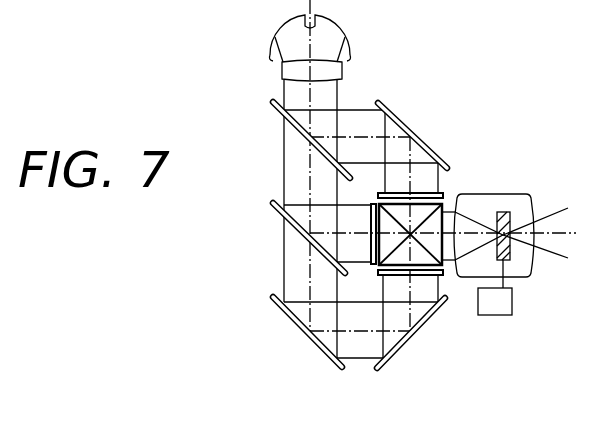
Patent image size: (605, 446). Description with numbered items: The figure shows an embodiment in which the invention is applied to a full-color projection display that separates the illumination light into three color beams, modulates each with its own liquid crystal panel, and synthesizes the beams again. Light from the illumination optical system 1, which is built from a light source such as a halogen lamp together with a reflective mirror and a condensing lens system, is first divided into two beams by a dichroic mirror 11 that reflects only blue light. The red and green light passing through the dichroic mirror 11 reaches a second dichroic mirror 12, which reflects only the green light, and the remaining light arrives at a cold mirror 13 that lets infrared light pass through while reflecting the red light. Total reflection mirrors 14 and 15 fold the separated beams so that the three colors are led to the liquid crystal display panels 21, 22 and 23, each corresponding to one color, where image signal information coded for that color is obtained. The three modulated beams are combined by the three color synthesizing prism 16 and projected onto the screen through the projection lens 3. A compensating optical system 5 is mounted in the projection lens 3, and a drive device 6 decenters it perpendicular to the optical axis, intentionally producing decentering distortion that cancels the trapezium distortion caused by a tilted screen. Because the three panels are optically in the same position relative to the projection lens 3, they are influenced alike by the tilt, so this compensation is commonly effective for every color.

The illumination optical system 1 is at (260, 15).
The projection lens 3 is at (510, 195).
The compensating optical system 5 is at (512, 252).
The drive device 6 is at (513, 305).
The dichroic mirror 11 is at (276, 107).
The dichroic mirror 12 is at (279, 198).
The cold mirror 13 is at (280, 294).
The total reflection mirror 14 is at (388, 104).
The total reflection mirror 15 is at (396, 352).
The three color synthesizing prism 16 is at (422, 259).
The liquid crystal display panel 21 is at (442, 194).
The liquid crystal display panel 22 is at (366, 276).
The liquid crystal display panel 23 is at (445, 277).